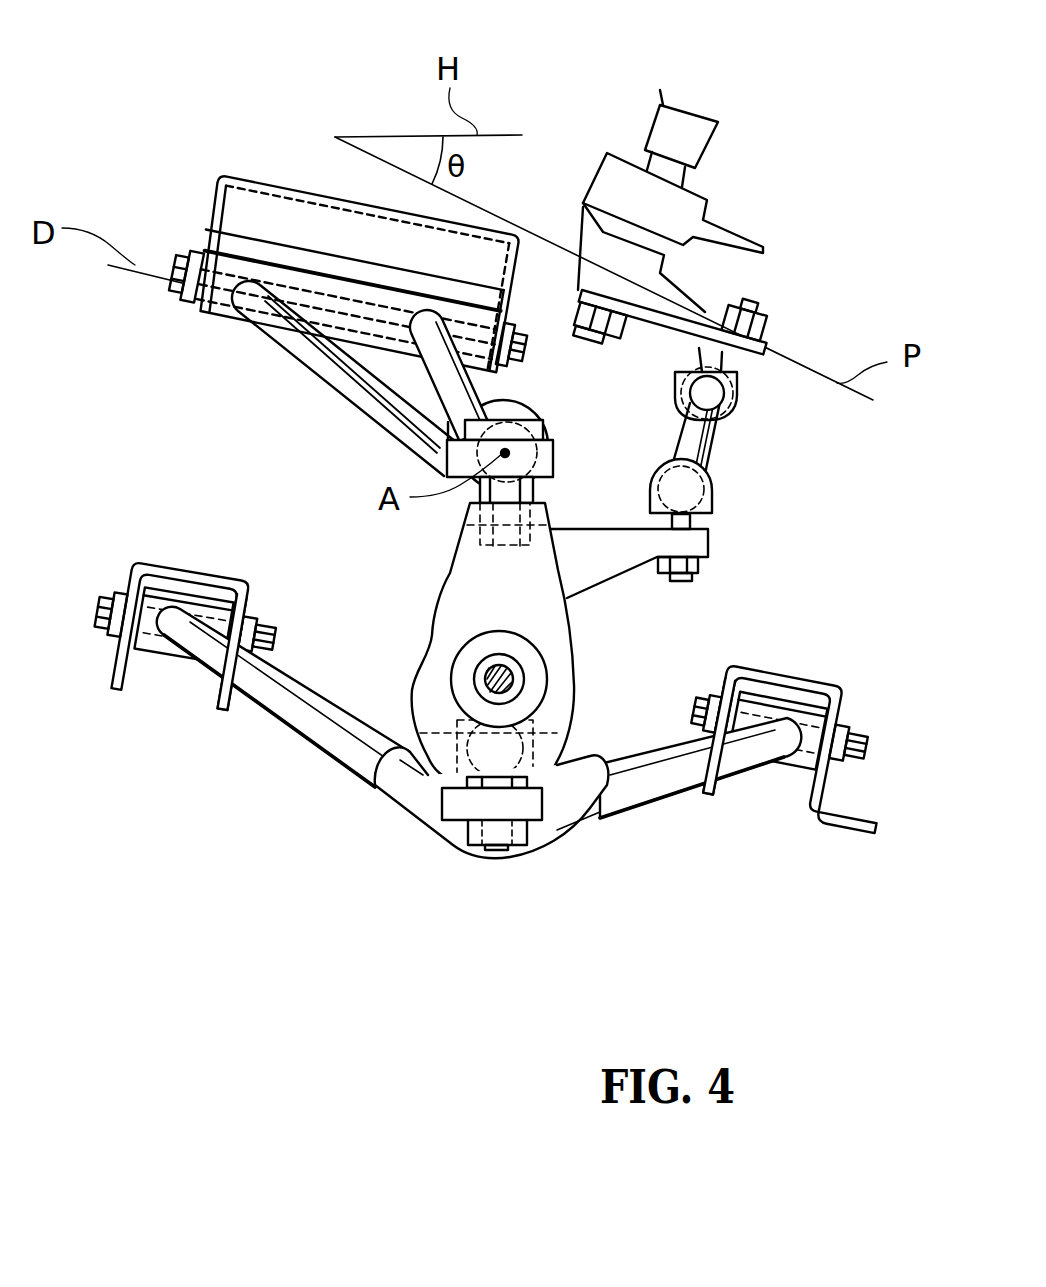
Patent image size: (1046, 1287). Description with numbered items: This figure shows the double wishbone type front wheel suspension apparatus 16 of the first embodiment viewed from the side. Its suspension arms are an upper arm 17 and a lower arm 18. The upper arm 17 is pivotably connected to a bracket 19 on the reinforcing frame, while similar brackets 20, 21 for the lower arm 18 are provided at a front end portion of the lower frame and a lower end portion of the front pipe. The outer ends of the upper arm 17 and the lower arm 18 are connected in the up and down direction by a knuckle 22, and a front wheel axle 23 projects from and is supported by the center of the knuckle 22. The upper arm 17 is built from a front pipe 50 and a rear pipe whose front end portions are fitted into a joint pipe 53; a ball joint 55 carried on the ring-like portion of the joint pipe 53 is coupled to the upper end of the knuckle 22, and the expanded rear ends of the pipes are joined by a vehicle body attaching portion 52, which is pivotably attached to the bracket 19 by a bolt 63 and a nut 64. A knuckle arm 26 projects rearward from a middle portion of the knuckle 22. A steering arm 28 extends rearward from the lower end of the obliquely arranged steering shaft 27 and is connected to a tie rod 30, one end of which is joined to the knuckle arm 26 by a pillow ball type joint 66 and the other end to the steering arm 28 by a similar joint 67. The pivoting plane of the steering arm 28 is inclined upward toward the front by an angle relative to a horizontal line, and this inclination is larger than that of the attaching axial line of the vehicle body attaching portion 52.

The front wheel suspension apparatus 16 is at (190, 125).
The upper arm 17 is at (280, 372).
The lower arm 18 is at (283, 757).
The bracket 19 is at (258, 187).
The bracket 20 is at (182, 560).
The bracket 21 is at (823, 683).
The knuckle 22 is at (460, 585).
The front wheel axle 23 is at (470, 680).
The knuckle arm 26 is at (695, 538).
The steering shaft 27 is at (653, 103).
The steering arm 28 is at (770, 343).
The tie rod 30 is at (720, 437).
The front pipe 50 is at (312, 370).
The vehicle body attaching portion 52 is at (350, 273).
The joint pipe 53 is at (500, 395).
The ball joint 55 is at (442, 392).
The bolt 63 is at (180, 268).
The nut 64 is at (545, 348).
The pillow ball type joint 66 is at (692, 485).
The joint 67 is at (728, 402).